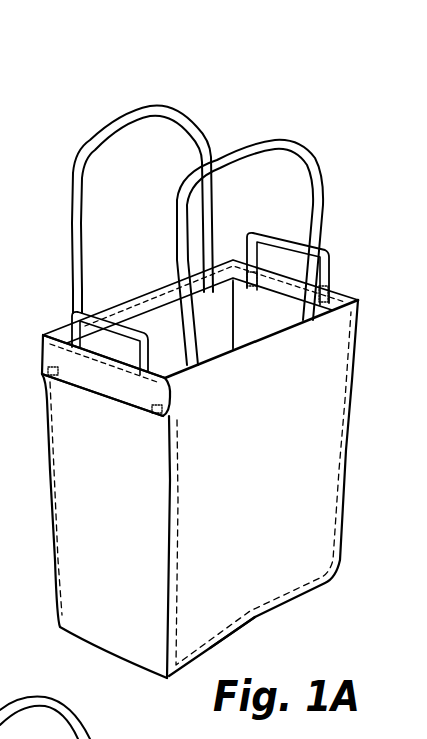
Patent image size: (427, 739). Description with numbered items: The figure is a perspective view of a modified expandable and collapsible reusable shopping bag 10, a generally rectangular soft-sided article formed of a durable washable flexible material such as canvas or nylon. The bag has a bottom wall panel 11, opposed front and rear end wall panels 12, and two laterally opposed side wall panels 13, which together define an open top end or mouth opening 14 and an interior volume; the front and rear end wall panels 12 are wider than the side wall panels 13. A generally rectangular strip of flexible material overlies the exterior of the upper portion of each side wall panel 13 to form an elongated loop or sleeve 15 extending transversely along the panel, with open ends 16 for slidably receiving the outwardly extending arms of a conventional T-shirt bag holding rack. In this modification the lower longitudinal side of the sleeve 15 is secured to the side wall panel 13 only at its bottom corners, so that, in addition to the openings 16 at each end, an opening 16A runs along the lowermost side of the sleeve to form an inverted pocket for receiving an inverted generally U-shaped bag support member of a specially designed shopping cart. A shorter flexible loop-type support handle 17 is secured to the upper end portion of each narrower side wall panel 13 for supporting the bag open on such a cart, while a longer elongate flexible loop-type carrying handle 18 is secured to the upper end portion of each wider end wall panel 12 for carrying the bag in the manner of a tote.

The reusable shopping bag 10 is at (201, 436).
The bottom wall panel 11 is at (258, 618).
The front and rear end wall panels 12 is at (260, 490).
The side wall panels 13 is at (120, 512).
The mouth opening 14 is at (158, 315).
The sleeve 15 is at (88, 383).
The open ends 16 is at (43, 355).
The opening along lowermost longitudinal side 16A is at (110, 403).
The support handle 17 is at (72, 328).
The carrying handle 18 is at (185, 182).